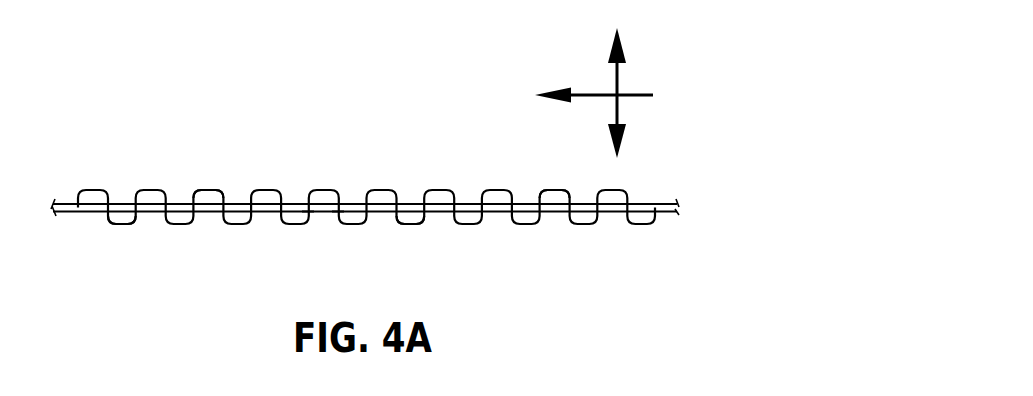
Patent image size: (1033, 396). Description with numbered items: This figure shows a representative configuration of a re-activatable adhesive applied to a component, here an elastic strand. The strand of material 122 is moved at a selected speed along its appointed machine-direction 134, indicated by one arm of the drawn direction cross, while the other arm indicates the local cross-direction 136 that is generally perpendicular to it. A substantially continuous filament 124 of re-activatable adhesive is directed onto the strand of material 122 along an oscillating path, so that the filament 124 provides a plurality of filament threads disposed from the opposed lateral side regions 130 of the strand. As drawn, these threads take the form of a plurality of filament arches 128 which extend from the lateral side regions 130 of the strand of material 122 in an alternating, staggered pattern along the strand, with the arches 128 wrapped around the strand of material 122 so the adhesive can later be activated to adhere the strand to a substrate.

The material strand 122 is at (660, 212).
The substantially continuous filament 124 is at (95, 190).
The filament arches 128 is at (203, 190).
The lateral side regions 130 is at (337, 203).
The machine-direction 134 is at (593, 91).
The cross-direction 136 is at (620, 78).